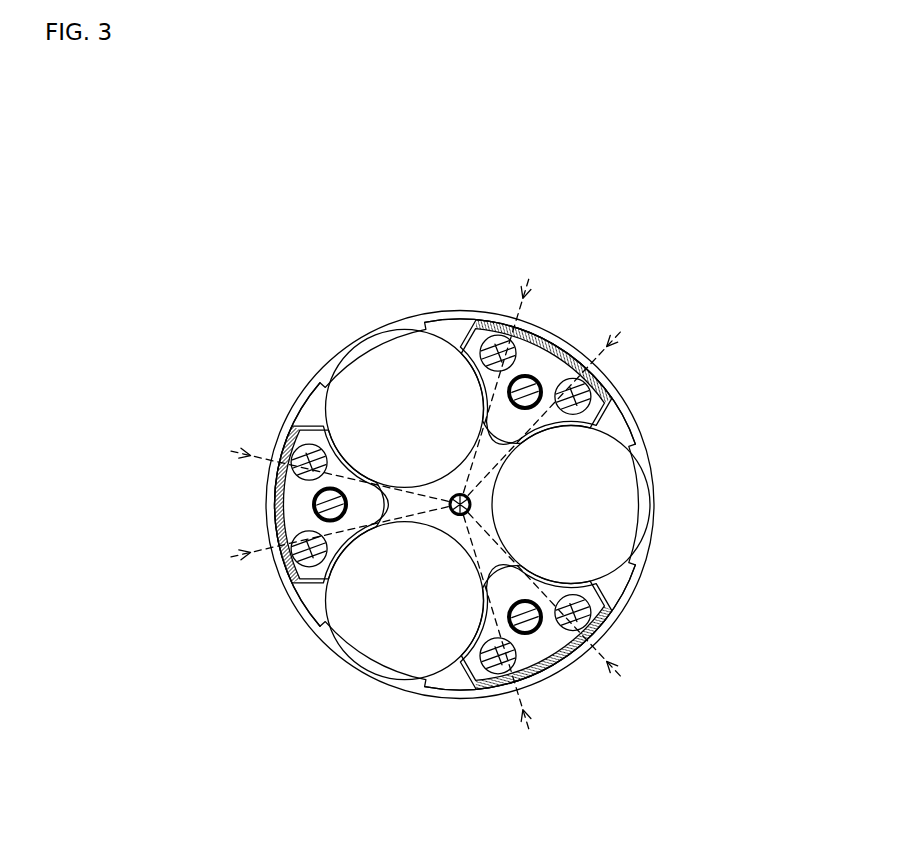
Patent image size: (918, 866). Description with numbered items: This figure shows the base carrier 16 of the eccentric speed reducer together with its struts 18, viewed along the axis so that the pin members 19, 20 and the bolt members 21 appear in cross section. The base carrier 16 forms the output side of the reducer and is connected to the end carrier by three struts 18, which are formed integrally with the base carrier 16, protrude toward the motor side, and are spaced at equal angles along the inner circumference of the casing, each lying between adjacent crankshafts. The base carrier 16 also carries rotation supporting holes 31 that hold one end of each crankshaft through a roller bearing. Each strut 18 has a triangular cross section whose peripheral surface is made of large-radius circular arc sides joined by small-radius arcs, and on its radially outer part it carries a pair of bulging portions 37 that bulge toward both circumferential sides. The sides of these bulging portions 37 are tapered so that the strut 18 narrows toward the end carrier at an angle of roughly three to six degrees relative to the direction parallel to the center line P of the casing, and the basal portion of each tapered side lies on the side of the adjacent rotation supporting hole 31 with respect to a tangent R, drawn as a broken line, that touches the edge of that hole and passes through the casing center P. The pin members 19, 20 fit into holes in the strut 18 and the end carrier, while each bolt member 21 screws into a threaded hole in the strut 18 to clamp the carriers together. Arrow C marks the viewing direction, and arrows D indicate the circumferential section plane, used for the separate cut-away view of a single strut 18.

The base carrier 16 is at (625, 573).
The strut 18 is at (550, 342).
The pin member 19 is at (305, 422).
The pin member 20 is at (490, 337).
The bolt member 21 is at (530, 374).
The rotation supporting hole 31 is at (341, 399).
The bulging portion 37 is at (315, 444).
The casing center P is at (455, 513).
The arrow C is at (610, 256).
The arrows D- D is at (447, 320).
The tangent R is at (523, 298).